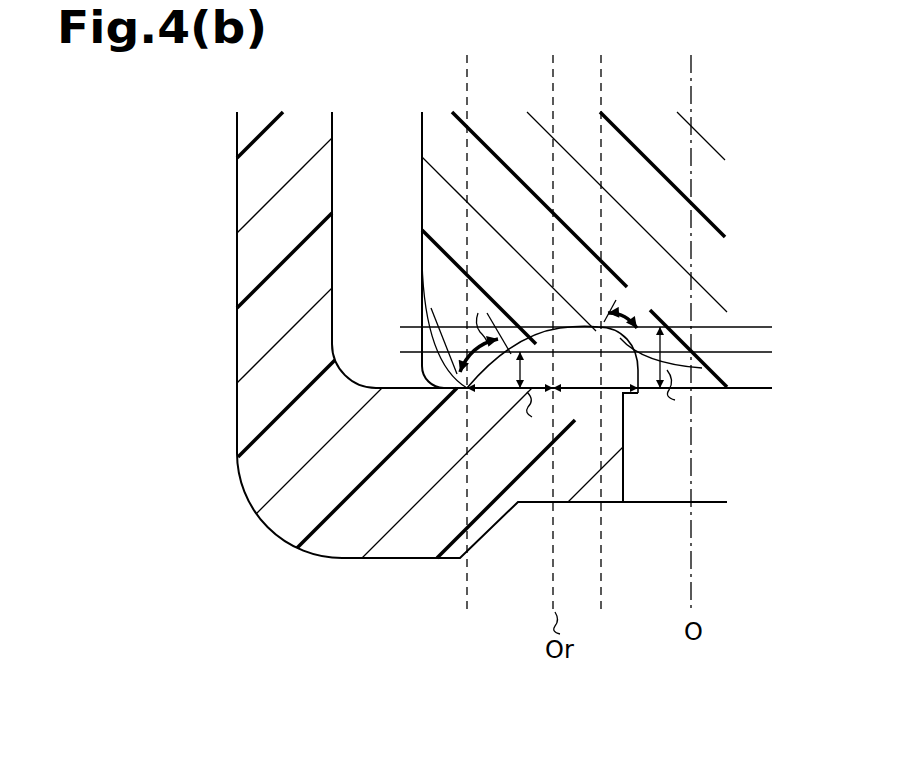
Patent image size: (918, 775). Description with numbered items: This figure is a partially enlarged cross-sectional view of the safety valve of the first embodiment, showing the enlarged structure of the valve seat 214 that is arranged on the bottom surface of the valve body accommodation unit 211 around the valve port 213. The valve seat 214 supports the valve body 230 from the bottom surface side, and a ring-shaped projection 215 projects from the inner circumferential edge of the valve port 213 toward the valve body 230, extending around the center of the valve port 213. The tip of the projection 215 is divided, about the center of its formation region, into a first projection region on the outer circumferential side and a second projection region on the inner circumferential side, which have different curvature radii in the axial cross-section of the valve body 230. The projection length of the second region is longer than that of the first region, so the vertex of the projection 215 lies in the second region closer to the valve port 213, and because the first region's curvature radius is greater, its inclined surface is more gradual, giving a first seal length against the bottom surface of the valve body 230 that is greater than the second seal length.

The valve body accommodation unit 211 is at (332, 148).
The valve port 213 is at (653, 470).
The valve seat 214 is at (505, 450).
The projection 215 is at (588, 318).
The valve body 230 is at (708, 192).